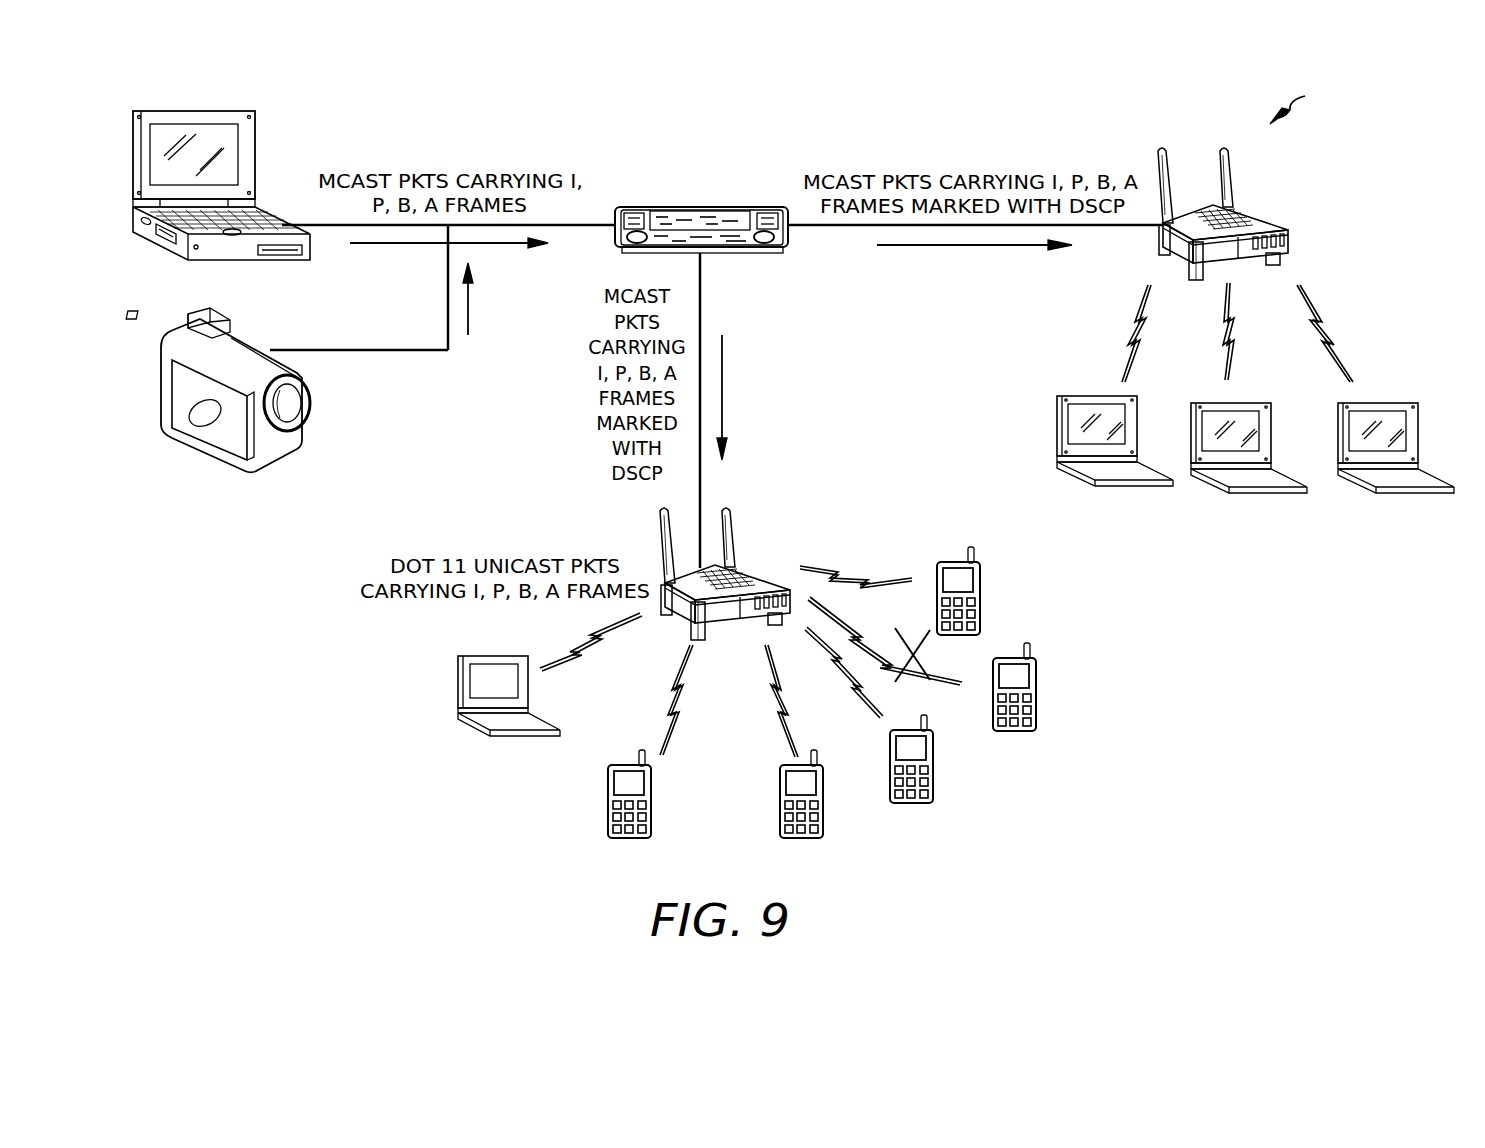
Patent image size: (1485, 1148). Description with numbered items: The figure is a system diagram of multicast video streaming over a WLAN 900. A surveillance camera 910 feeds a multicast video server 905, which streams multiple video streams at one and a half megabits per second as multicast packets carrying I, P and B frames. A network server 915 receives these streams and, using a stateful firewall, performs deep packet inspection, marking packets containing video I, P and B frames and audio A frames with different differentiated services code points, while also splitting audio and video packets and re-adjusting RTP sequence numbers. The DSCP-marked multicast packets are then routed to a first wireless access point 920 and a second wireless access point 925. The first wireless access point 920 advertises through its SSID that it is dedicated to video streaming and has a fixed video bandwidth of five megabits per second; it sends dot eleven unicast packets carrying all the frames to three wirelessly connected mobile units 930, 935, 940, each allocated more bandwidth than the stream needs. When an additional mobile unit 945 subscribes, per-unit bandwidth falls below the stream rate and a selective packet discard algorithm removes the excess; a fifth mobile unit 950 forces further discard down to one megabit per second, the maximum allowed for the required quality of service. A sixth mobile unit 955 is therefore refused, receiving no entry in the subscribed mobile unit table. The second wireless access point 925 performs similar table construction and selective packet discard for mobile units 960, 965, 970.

The WLAN 900 is at (1310, 102).
The multicast video server 905 is at (198, 110).
The surveillance camera 910 is at (160, 377).
The network server 915 is at (701, 207).
The first wireless access point 920 is at (738, 567).
The second wireless access point 925 is at (1254, 219).
The mobile unit 930 is at (460, 684).
The mobile unit 935 is at (653, 789).
The mobile unit 940 is at (780, 828).
The additional mobile unit 945 is at (934, 766).
The fifth mobile unit 950 is at (981, 600).
The sixth mobile unit 955 is at (1038, 695).
The mobile unit 960 is at (1074, 395).
The mobile unit 965 is at (1210, 402).
The mobile unit 970 is at (1355, 402).